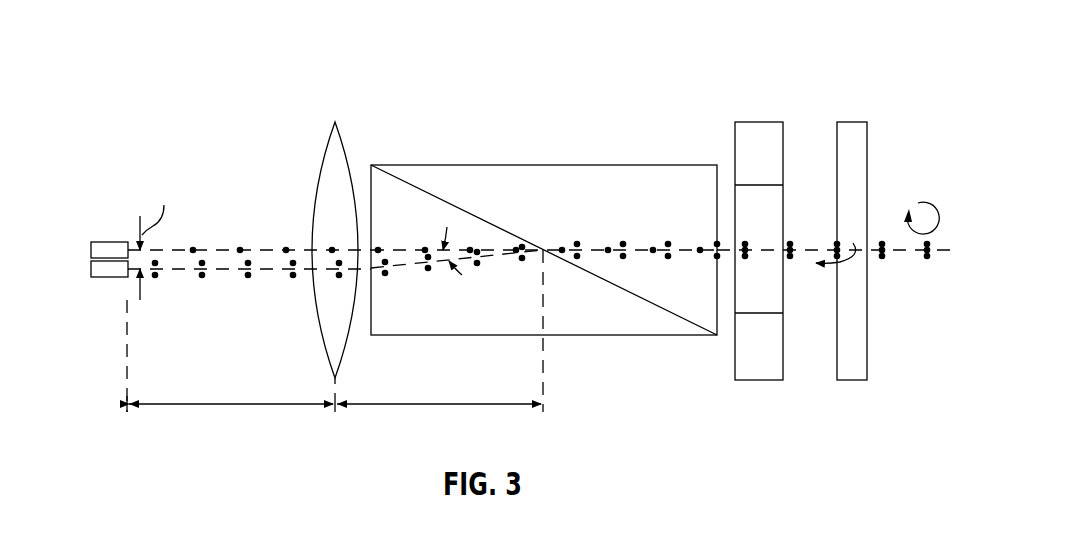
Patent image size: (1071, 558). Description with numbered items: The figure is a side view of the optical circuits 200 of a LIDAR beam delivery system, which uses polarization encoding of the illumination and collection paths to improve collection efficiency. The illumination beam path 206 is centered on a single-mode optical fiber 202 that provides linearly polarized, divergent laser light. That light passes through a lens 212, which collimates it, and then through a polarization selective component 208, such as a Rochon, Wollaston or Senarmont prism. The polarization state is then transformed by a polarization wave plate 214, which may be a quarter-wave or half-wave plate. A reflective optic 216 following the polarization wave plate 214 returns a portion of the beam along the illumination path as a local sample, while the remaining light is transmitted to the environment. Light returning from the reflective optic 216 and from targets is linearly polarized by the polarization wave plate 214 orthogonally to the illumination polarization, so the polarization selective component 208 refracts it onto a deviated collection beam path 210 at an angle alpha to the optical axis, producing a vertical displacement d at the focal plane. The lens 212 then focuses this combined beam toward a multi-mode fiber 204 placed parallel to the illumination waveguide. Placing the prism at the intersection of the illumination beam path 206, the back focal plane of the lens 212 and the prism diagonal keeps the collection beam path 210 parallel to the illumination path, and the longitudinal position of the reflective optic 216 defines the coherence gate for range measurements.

The optical circuits 200 is at (188, 41).
The single-mode optical fiber 202 is at (108, 242).
The multi-mode fiber 204 is at (108, 277).
The illumination beam path 206 is at (262, 249).
The polarization selective component 208 is at (550, 164).
The collection beam path 210 is at (280, 271).
The lens 212 is at (333, 123).
The polarization wave plate 214 is at (758, 121).
The reflective optic 216 is at (852, 121).